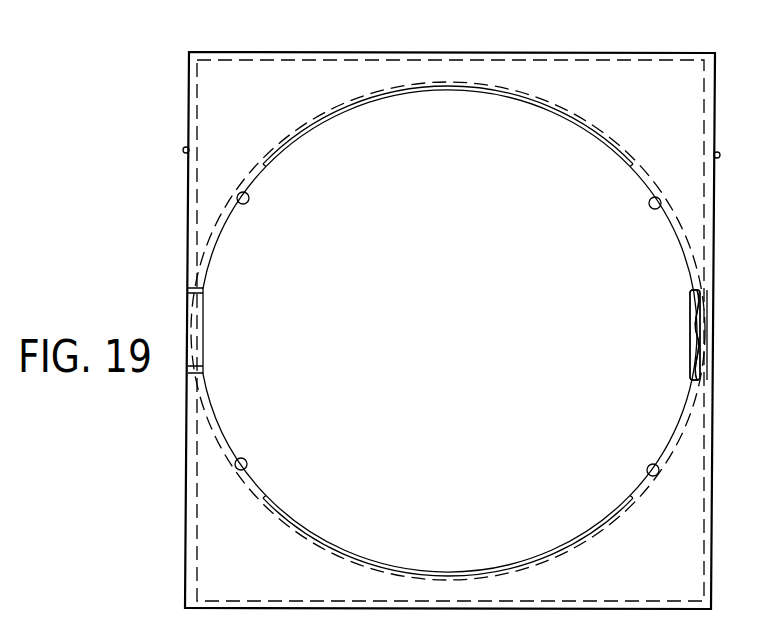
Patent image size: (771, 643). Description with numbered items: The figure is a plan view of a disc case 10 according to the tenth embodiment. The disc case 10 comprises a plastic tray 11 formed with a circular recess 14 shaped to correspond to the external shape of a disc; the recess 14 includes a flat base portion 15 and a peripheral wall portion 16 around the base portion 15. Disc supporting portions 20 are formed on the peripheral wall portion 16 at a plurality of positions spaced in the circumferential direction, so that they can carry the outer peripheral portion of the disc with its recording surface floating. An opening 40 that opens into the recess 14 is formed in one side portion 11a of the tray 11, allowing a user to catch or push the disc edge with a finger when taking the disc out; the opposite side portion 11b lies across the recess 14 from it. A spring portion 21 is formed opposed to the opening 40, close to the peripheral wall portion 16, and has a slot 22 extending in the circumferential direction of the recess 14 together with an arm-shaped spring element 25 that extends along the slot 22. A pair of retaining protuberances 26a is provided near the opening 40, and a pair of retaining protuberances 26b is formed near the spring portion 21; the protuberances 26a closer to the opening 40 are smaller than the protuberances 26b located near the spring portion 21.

The disc case 10 is at (675, 50).
The tray 11 is at (614, 62).
The one side portion 11a is at (188, 148).
The right side wall 11b is at (714, 152).
The circular recess 14 is at (448, 331).
The flat base portion 15 is at (363, 113).
The peripheral wall portion 16 is at (412, 93).
The disc supporting portions 20 is at (484, 93).
The spring portion 21 is at (680, 342).
The slot 22 is at (690, 311).
The spring element 25 is at (693, 352).
The retaining protuberances 26a is at (247, 205).
The retaining protuberances 26b is at (652, 210).
The opening 40 is at (203, 320).